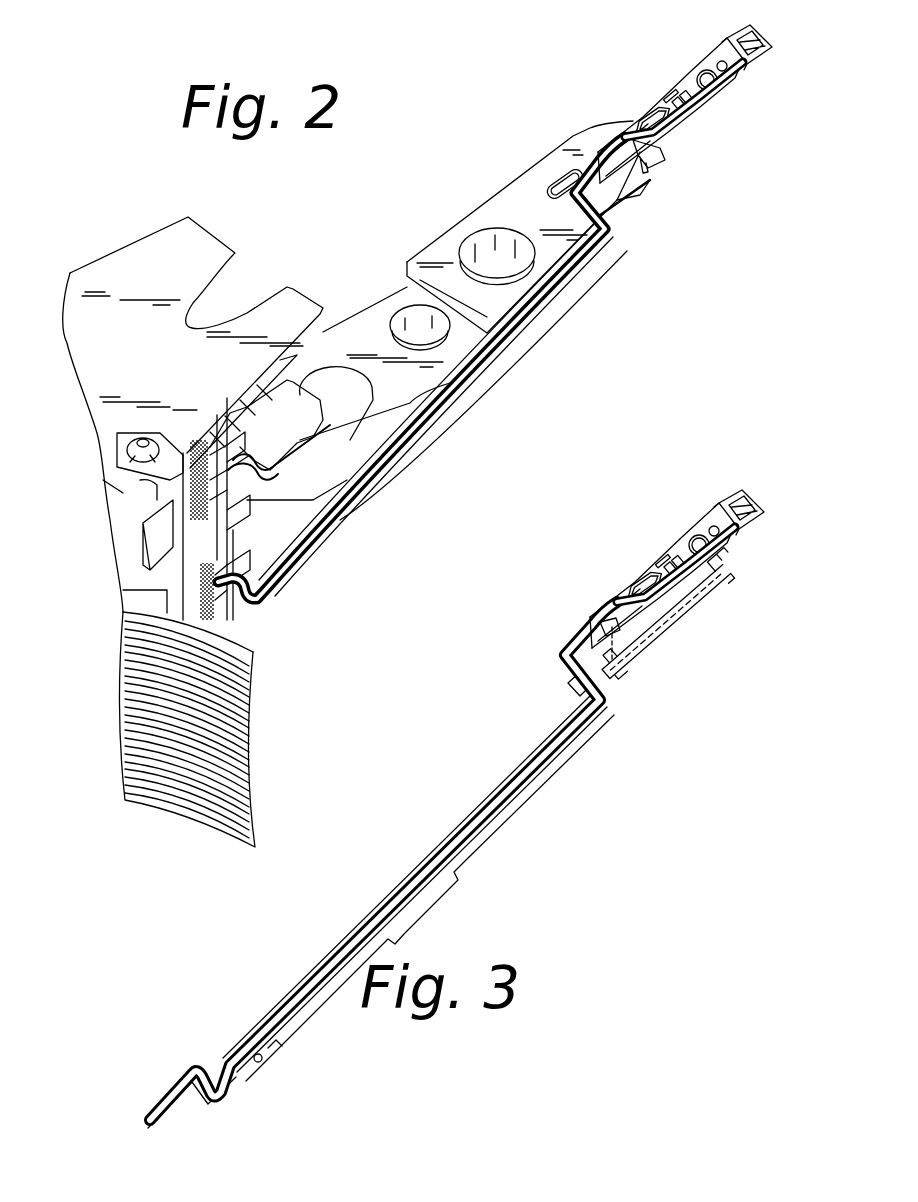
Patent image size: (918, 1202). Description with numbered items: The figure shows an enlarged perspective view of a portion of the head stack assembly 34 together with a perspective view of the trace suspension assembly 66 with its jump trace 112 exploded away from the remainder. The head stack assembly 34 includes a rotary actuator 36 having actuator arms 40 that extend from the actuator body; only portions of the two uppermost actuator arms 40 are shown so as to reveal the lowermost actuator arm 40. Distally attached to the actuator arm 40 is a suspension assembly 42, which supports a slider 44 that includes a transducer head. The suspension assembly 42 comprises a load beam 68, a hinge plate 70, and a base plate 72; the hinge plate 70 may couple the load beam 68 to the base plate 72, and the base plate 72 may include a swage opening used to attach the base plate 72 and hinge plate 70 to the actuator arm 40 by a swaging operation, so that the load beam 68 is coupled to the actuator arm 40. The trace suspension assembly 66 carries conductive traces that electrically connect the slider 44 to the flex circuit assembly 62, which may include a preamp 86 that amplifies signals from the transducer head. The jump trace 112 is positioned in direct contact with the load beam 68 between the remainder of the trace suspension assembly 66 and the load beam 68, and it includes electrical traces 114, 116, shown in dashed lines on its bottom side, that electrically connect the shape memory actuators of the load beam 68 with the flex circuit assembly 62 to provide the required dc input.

In FIG. 2, the head stack assembly 34 is at (88, 348).
In FIG. 2, the rotary actuator 36 is at (85, 372).
In FIG. 2, the actuator arm 40 is at (150, 251).
In FIG. 2, the suspension assembly 42 is at (484, 134).
In FIG. 2, the slider 44 is at (740, 38).
In FIG. 3, the slider 44 is at (727, 503).
In FIG. 2, the flex circuit assembly 62 is at (167, 590).
In FIG. 2, the trace suspension assembly 66 is at (452, 375).
In FIG. 3, the trace suspension assembly 66 is at (527, 760).
In FIG. 2, the load beam 68 is at (660, 153).
In FIG. 2, the hinge plate 70 is at (507, 207).
In FIG. 2, the base plate 72 is at (638, 200).
In FIG. 2, the preamp 86 is at (153, 540).
In FIG. 2, the jump trace 112 is at (693, 108).
In FIG. 3, the jump trace 112 is at (677, 623).
In FIG. 3, the electrical trace 114 is at (713, 588).
In FIG. 3, the electrical trace 116 is at (620, 662).